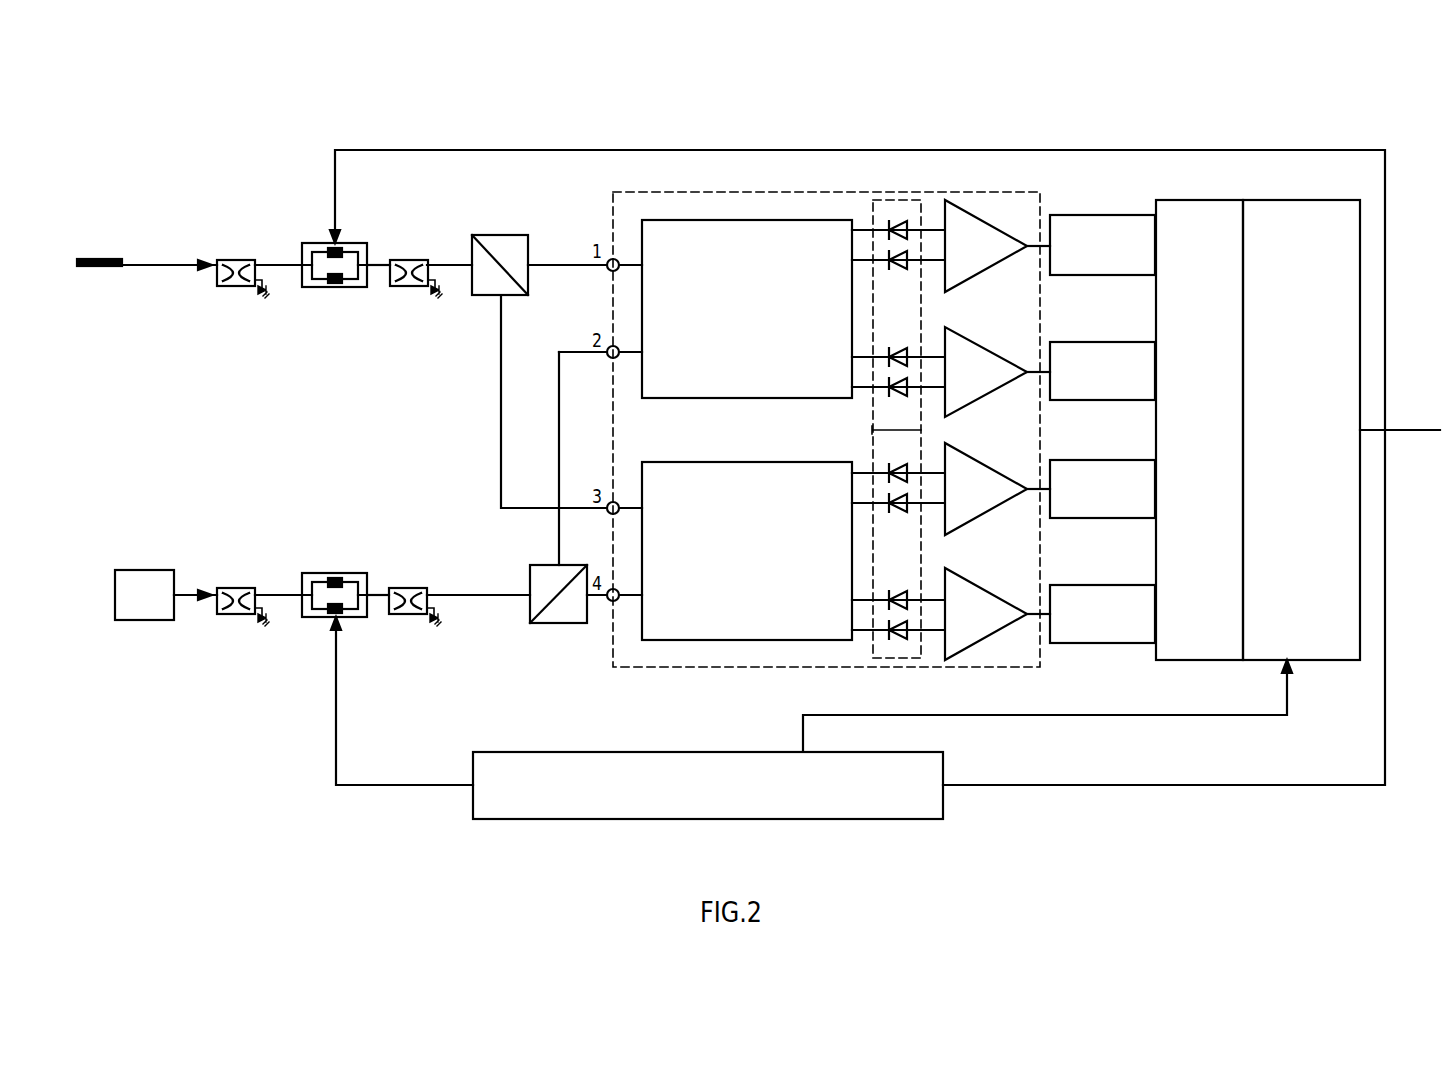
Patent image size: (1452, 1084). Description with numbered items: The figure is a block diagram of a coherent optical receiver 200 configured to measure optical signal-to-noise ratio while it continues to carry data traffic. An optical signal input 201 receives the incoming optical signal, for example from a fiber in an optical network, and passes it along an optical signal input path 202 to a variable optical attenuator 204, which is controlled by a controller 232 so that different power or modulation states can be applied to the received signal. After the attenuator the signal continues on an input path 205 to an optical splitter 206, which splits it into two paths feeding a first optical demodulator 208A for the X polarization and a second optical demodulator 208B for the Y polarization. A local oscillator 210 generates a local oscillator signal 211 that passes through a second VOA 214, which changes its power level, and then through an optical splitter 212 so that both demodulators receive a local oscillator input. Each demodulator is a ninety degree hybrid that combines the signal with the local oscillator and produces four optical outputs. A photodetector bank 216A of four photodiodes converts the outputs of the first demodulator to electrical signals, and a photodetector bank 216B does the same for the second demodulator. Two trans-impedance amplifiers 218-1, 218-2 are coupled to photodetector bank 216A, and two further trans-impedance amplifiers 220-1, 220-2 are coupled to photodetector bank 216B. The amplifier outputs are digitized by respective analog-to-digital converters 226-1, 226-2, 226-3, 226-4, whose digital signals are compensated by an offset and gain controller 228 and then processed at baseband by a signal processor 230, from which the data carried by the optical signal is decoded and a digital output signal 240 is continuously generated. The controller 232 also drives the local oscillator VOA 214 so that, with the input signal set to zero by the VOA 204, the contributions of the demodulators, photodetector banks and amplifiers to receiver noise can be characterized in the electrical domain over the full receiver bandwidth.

The optical receiver 200 is at (197, 124).
The optical signal input 201 is at (107, 258).
The optical signal input path 202 is at (153, 268).
The variable optical attenuator 204 is at (353, 243).
The input path 205 is at (376, 268).
The optical splitter 206 is at (490, 235).
The first optical demodulator 208A is at (748, 462).
The second optical demodulator 208B is at (722, 398).
The local oscillator 210 is at (160, 570).
The local oscillator signal 211 is at (278, 592).
The optical splitter 212 is at (563, 623).
The VOA 214 is at (355, 617).
The photodetector bank 216A is at (897, 658).
The photodetector bank 216B is at (897, 200).
The trans-impedance amplifier 218-1 is at (968, 448).
The trans-impedance amplifier 218-2 is at (968, 573).
The trans-impedance amplifier 220-1 is at (968, 205).
The trans-impedance amplifier 220-2 is at (968, 331).
The analog-to-digital converter 226-1 is at (1078, 275).
The analog-to-digital converter 226-2 is at (1078, 400).
The analog-to-digital converter 226-3 is at (1078, 518).
The analog-to-digital converter 226-4 is at (1078, 643).
The offset and gain controller 228 is at (1180, 200).
The signal processor 230 is at (1292, 200).
The controller 232 is at (668, 752).
The digital output signal 240 is at (1410, 430).